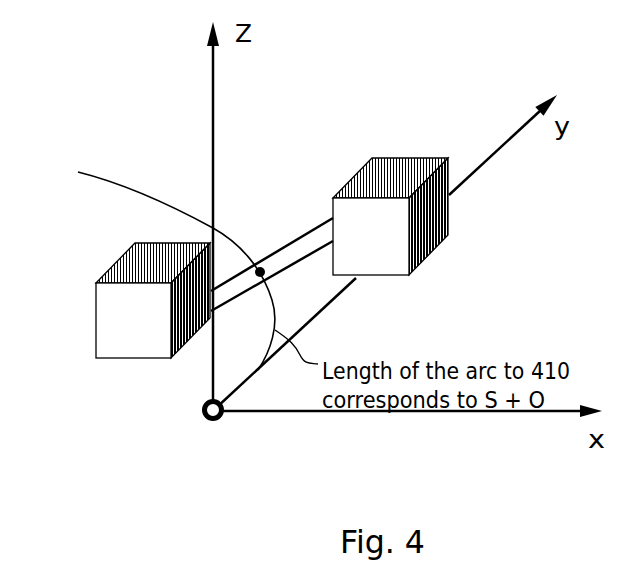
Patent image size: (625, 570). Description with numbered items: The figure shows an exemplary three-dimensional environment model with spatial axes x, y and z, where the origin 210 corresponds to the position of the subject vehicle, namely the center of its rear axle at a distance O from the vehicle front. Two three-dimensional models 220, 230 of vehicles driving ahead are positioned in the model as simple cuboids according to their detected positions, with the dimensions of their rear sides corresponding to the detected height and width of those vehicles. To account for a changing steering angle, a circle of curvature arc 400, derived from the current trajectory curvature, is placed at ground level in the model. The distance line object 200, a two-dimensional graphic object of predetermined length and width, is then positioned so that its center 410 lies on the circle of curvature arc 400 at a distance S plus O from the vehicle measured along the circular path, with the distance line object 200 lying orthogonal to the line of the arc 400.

The circle of curvature arc 400 is at (143, 193).
The 3D model of a vehicle driving ahead 230 is at (92, 325).
The 3D model of a vehicle driving ahead 220 is at (360, 172).
The distance line object 200 is at (312, 232).
The origin 210 is at (204, 403).
The center of the distance line object 410 is at (266, 277).